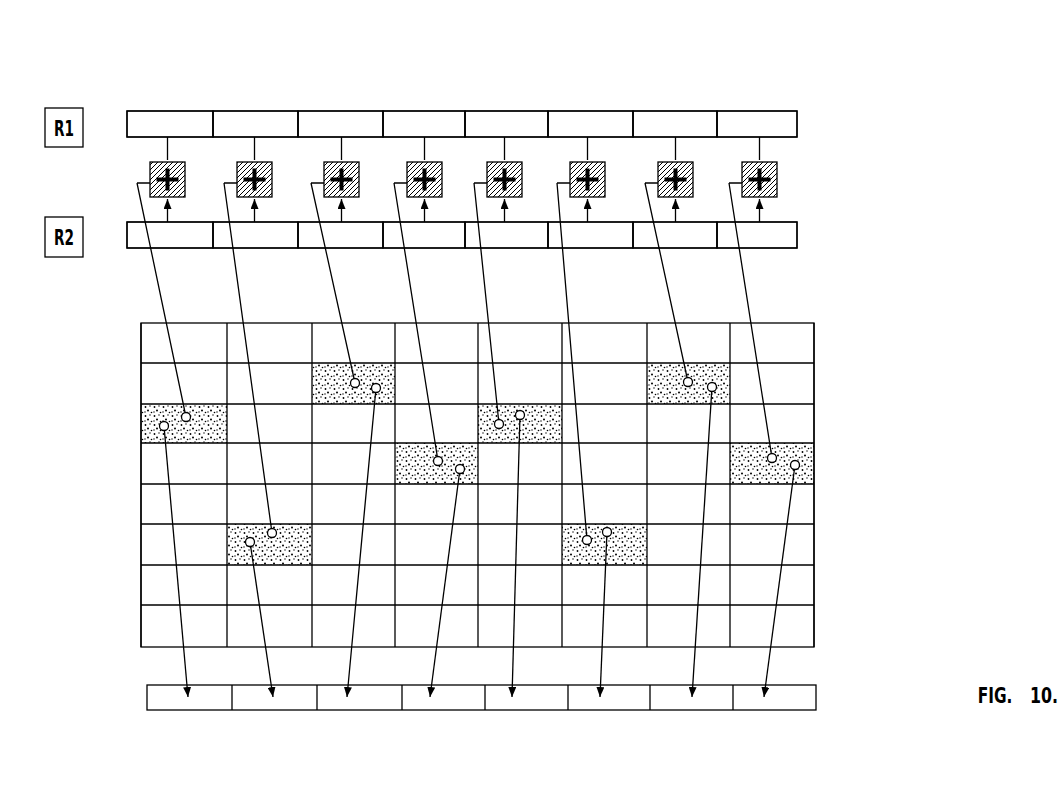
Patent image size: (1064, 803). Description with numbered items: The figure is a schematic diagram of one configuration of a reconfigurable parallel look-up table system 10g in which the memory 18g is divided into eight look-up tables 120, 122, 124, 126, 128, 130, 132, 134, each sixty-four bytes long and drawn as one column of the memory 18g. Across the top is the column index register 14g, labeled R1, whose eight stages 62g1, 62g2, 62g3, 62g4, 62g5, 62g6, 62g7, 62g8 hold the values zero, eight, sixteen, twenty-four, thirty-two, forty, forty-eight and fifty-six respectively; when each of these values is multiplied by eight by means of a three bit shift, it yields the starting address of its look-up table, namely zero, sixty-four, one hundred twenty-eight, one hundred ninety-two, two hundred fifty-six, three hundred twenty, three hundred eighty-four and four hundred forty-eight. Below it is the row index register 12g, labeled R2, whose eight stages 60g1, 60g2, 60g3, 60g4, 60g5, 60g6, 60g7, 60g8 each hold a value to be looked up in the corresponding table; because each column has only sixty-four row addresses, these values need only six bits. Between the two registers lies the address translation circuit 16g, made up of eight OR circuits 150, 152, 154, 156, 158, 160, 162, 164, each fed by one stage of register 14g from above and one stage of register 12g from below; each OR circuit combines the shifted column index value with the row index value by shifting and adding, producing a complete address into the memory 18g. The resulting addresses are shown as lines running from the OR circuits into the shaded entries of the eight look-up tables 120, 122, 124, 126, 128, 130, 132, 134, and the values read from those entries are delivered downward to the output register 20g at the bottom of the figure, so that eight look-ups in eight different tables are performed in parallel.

The reconfigurable parallel look-up table system 10g is at (1045, 63).
The row index register 12g is at (800, 227).
The column index register 14g is at (800, 116).
The address translation circuit 16g is at (795, 167).
The memory 18g is at (818, 378).
The output register 20g is at (817, 697).
The stage of column index register 62g1 is at (743, 108).
The stage of column index register 62g2 is at (660, 108).
The stage of column index register 62g3 is at (577, 109).
The stage of column index register 62g4 is at (494, 109).
The stage of column index register 62g5 is at (410, 109).
The stage of column index register 62g6 is at (327, 109).
The stage of column index register 62g7 is at (238, 109).
The stage of column index register 62g8 is at (150, 110).
The stage of row index register 60g1 is at (797, 246).
The stage of row index register 60g2 is at (660, 242).
The stage of row index register 60g3 is at (577, 242).
The stage of row index register 60g4 is at (493, 242).
The stage of row index register 60g5 is at (410, 242).
The stage of row index register 60g6 is at (325, 242).
The stage of row index register 60g7 is at (238, 242).
The stage of row index register 60g8 is at (159, 242).
The OR circuit 150 is at (744, 163).
The OR circuit 152 is at (660, 163).
The OR circuit 154 is at (572, 163).
The OR circuit 156 is at (489, 163).
The OR circuit 158 is at (409, 163).
The OR circuit 160 is at (326, 163).
The OR circuit 162 is at (239, 163).
The OR circuit 164 is at (152, 163).
The look-up table 120 is at (192, 323).
The look-up table 122 is at (268, 323).
The look-up table 124 is at (353, 323).
The look-up table 126 is at (432, 323).
The look-up table 128 is at (510, 323).
The look-up table 130 is at (598, 323).
The look-up table 132 is at (692, 323).
The look-up table 134 is at (775, 323).